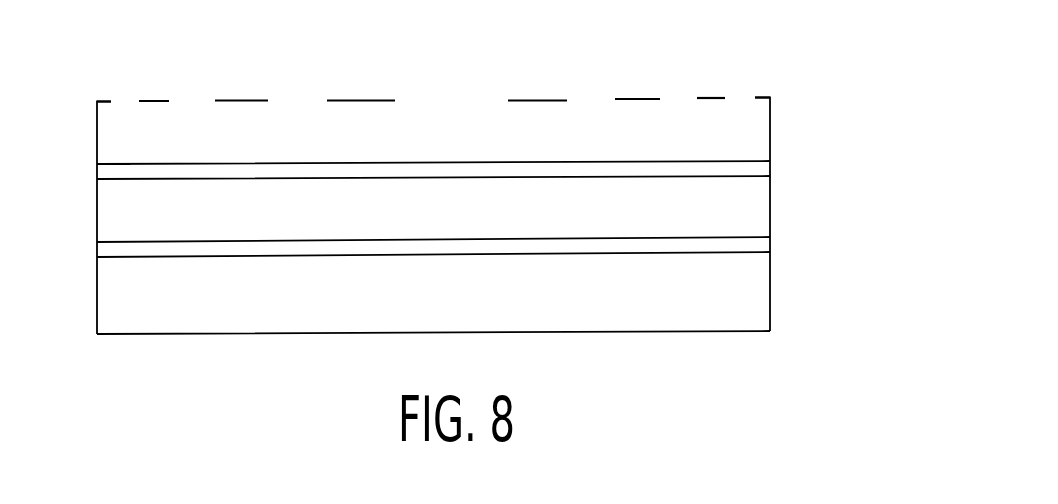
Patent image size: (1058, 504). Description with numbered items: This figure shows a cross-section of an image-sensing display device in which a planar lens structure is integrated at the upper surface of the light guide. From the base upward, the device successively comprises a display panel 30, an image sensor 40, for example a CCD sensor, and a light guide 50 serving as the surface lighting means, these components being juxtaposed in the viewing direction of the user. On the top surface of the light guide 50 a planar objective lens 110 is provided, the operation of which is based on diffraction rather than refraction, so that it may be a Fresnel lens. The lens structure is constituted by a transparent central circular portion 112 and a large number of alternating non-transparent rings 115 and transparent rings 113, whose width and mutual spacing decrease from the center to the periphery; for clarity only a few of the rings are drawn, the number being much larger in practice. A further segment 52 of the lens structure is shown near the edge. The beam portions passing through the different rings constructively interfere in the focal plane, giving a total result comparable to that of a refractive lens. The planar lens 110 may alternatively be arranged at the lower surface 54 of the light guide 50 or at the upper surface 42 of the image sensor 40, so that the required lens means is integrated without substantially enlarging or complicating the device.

The display panel 30 is at (755, 300).
The image sensor 40 is at (753, 213).
The upper surface of the image sensor 42 is at (753, 169).
The light guide 50 is at (753, 129).
The mask segment 52 is at (712, 91).
The lower surface of the light guide 54 is at (115, 165).
The planar objective lens 110 is at (594, 91).
The transparent central circular portion 112 is at (448, 98).
The transparent rings 113 is at (190, 101).
The non-transparent rings 115 is at (152, 100).